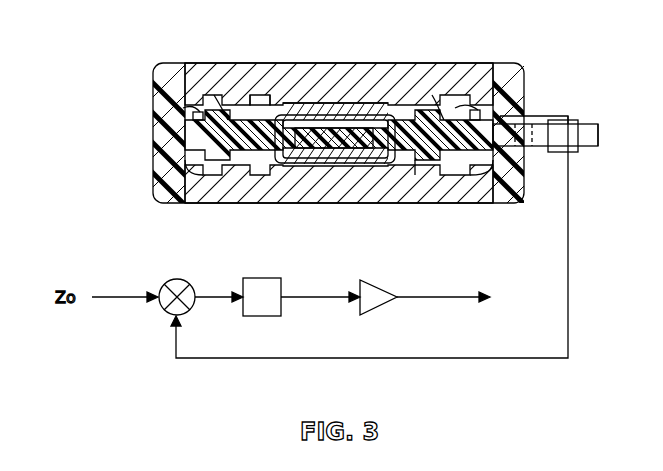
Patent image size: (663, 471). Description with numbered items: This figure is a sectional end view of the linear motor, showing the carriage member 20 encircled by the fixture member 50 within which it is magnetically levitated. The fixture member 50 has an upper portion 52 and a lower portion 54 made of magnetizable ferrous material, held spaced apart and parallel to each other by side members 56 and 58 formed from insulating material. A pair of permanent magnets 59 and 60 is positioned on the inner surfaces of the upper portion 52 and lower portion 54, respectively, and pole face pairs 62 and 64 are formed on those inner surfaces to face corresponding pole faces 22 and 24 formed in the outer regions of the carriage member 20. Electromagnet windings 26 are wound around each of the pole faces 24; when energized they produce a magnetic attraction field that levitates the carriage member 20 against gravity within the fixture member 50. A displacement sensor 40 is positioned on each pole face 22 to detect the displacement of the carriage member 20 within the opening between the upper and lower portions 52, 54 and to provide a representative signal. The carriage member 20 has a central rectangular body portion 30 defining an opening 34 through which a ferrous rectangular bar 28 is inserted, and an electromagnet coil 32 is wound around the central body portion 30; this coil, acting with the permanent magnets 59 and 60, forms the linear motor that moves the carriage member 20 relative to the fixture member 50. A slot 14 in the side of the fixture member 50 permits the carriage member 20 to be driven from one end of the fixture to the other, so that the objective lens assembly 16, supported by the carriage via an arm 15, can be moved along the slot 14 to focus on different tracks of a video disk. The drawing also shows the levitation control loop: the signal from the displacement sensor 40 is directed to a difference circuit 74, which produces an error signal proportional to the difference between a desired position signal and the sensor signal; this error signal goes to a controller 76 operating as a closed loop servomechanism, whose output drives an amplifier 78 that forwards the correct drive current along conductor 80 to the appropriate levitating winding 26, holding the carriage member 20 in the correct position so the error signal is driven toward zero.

The slot 14 is at (518, 150).
The arm 15 is at (600, 134).
The objective lens assembly 16 is at (566, 120).
The carriage member 20 is at (166, 152).
The pole faces 22 is at (165, 140).
The pole faces 24 is at (420, 78).
The electromagnet windings 26 is at (446, 78).
The rectangular bar 28 is at (380, 170).
The central rectangular body portion 30 is at (353, 170).
The electromagnet coil 32 is at (254, 78).
The opening 34 is at (282, 80).
The displacement sensor 40 is at (182, 110).
The fixture member 50 is at (150, 74).
The upper portion 52 is at (206, 70).
The lower portion 54 is at (232, 203).
The side member 56 is at (150, 200).
The side member 58 is at (520, 190).
The permanent magnet 59 is at (346, 80).
The permanent magnet 60 is at (300, 170).
The pole face pairs 62 is at (196, 184).
The pole face pairs 64 is at (437, 190).
The difference circuit 74 is at (162, 310).
The controller 76 is at (262, 297).
The amplifier 78 is at (360, 306).
The conductor 80 is at (448, 300).